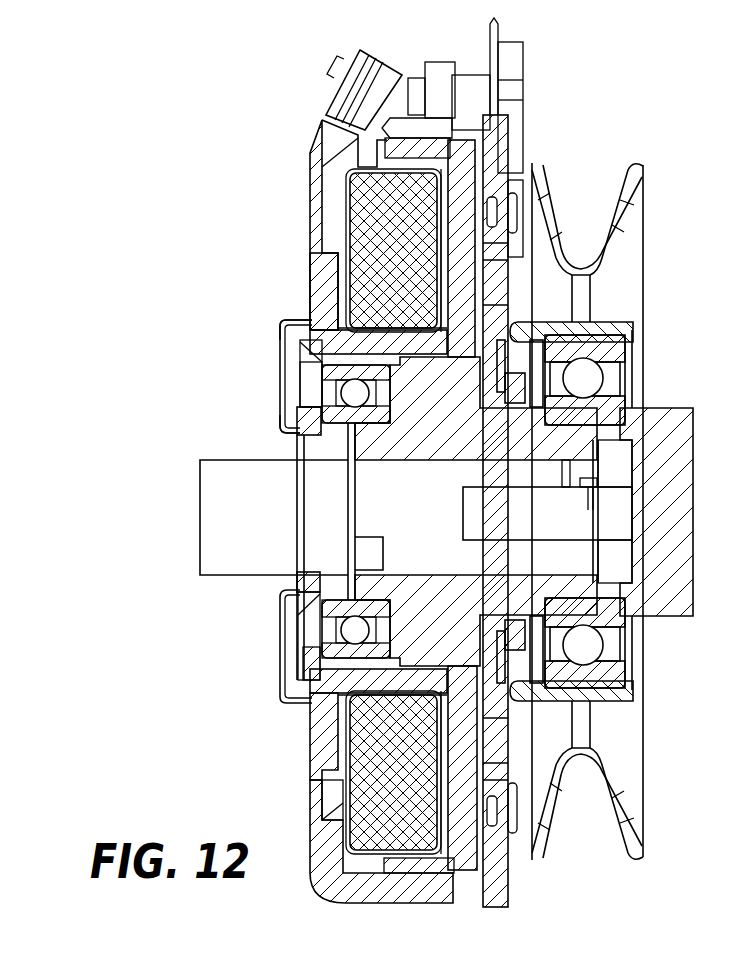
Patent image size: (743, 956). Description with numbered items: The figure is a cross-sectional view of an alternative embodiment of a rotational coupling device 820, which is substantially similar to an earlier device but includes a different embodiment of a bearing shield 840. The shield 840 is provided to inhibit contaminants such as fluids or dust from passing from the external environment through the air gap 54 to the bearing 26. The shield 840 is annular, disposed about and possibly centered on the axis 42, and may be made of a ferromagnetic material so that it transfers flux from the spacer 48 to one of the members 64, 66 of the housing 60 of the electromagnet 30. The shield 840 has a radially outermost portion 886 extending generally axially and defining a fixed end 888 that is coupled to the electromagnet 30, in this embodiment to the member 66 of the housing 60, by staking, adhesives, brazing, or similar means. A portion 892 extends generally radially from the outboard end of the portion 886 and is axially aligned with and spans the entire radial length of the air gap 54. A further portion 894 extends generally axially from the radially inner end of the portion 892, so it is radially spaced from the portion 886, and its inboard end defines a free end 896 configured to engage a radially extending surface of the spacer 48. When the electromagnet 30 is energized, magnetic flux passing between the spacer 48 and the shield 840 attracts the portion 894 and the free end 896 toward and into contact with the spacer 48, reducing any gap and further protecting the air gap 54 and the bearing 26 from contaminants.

The rotational coupling device 820 is at (198, 170).
The electromagnet 30 is at (398, 263).
The fixed end 888 is at (306, 307).
The radially outermost portion 886 is at (287, 322).
The portion 892 is at (280, 362).
The portion 894 is at (287, 427).
The free end 896 is at (300, 443).
The axis 42 is at (740, 512).
The bearing 26 is at (365, 428).
The spacer 48 is at (282, 592).
The bearing shield 840 is at (265, 640).
The air gap 54 is at (318, 640).
The member 64 is at (357, 670).
The housing 60 is at (317, 753).
The member 66 is at (325, 880).